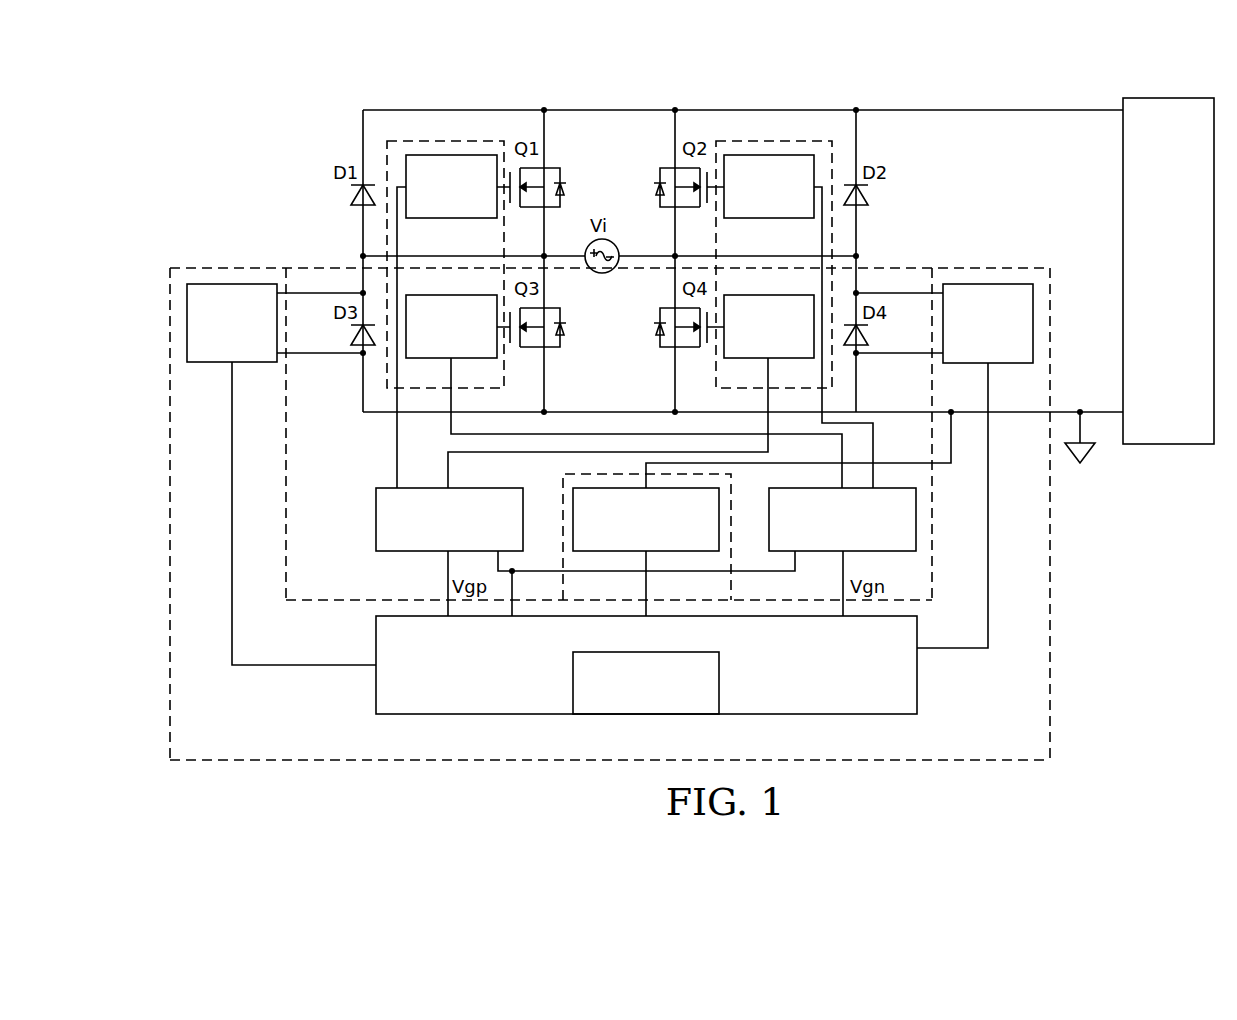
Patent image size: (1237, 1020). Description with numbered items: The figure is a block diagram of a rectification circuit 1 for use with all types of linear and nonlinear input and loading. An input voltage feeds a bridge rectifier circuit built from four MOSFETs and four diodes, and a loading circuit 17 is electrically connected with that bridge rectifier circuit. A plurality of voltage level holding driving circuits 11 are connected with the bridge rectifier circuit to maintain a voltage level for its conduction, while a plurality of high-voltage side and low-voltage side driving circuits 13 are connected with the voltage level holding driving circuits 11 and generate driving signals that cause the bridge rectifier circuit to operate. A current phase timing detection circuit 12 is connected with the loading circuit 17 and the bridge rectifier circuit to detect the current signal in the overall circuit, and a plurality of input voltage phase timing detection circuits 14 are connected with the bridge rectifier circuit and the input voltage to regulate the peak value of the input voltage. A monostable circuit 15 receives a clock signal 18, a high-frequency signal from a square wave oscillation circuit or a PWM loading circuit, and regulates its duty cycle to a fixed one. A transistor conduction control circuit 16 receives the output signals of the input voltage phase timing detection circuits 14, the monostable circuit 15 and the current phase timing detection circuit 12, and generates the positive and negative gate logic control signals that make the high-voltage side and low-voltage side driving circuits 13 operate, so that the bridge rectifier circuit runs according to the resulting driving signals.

The power conversion device 1 is at (244, 166).
The voltage level holding driving circuit 11 is at (635, 321).
The current phase timing detection circuit 12 is at (762, 514).
The high-voltage side and low-voltage side driving circuit 13 is at (646, 552).
The input voltage phase timing detection circuit 14 is at (610, 474).
The monostable circuit 15 is at (646, 683).
The transistor conduction control circuit 16 is at (646, 665).
The loading circuit 17 is at (1168, 271).
The clock signal 18 is at (646, 714).